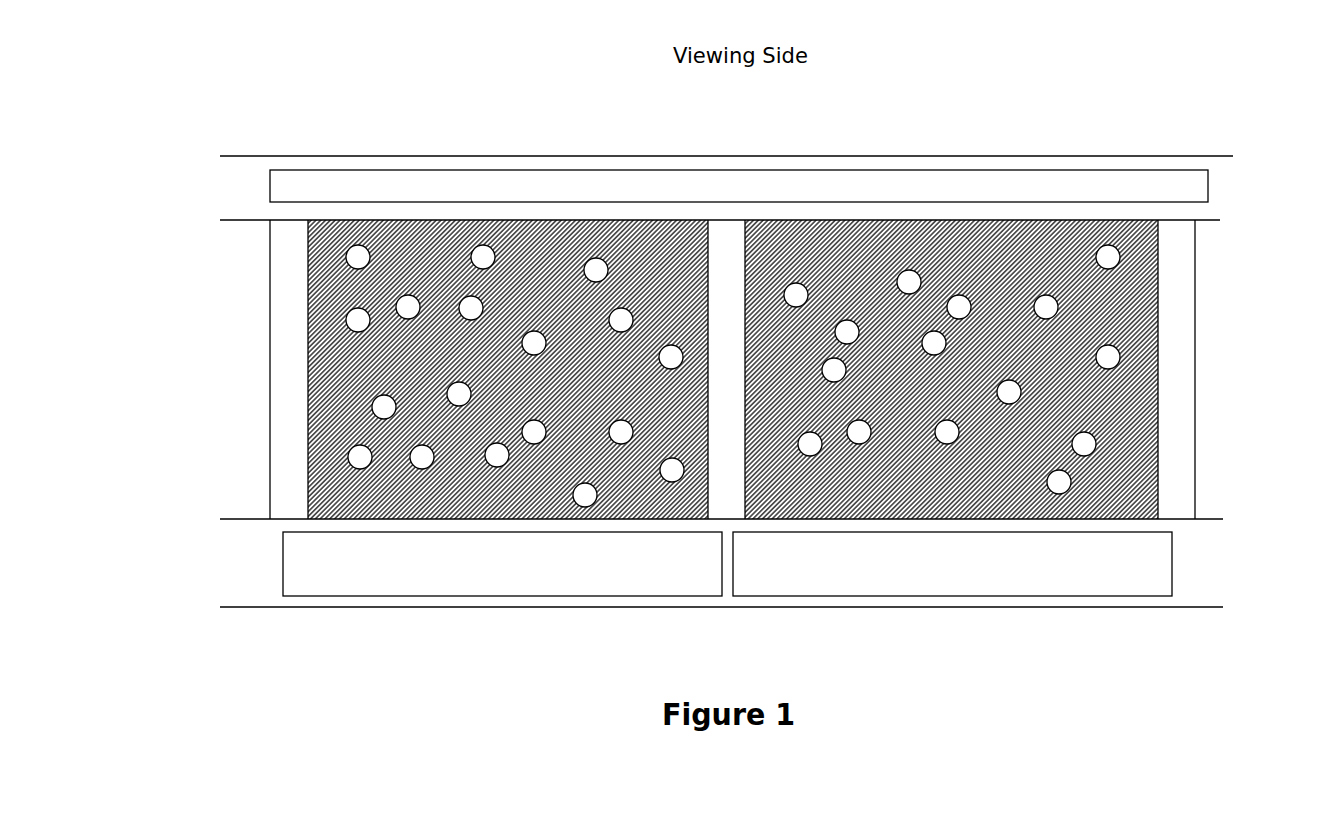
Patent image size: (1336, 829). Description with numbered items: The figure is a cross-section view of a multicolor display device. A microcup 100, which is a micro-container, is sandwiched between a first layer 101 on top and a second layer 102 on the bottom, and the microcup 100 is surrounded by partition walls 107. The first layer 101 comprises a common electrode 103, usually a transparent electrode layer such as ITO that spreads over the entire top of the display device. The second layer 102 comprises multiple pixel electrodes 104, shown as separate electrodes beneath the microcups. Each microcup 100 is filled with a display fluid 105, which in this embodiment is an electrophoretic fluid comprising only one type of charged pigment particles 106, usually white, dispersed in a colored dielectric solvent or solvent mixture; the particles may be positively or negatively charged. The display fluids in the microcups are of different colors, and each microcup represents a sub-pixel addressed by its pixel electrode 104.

The microcup 100 is at (724, 369).
The first layer 101 is at (698, 188).
The second layer 102 is at (693, 569).
The common electrode 103 is at (739, 186).
The pixel electrodes 104 is at (727, 564).
The display fluid 105 is at (1133, 305).
The charged pigment particles 106 is at (1013, 383).
The partition walls 107 is at (1172, 457).